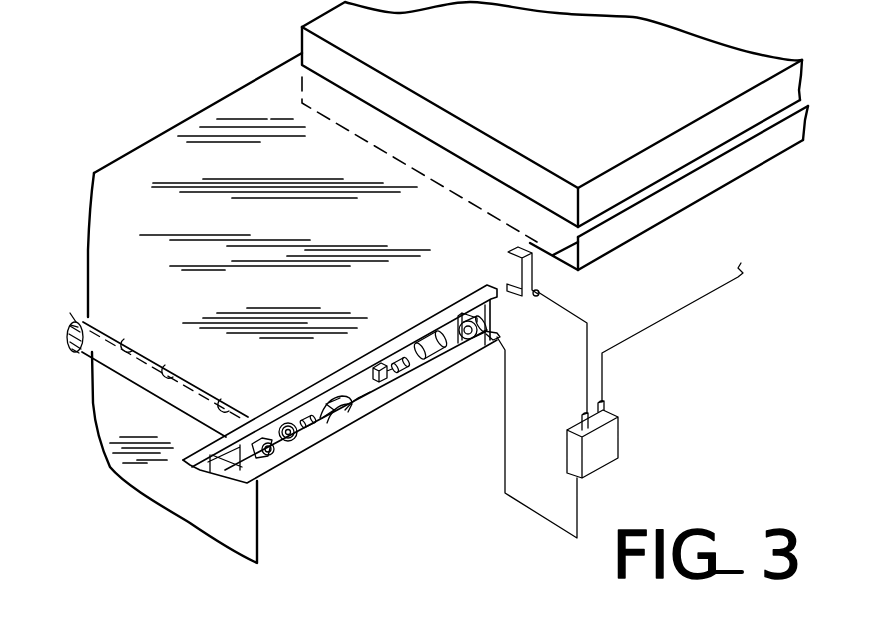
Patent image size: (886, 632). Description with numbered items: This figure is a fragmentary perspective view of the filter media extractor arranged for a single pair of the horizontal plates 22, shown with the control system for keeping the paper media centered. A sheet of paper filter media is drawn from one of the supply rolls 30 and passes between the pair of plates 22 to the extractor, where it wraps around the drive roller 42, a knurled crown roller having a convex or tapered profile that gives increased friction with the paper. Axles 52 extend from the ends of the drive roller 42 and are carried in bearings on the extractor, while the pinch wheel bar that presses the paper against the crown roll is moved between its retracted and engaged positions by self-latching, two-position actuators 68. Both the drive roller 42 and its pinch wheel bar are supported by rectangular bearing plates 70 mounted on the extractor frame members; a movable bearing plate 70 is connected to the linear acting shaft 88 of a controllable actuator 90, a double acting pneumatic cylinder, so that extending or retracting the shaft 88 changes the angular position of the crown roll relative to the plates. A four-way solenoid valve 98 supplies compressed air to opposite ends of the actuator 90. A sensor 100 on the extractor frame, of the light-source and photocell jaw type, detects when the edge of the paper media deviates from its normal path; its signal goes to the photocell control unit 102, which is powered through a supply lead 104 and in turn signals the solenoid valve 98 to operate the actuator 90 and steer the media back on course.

The horizontal plates 22 is at (638, 222).
The rolls of filter media 30 is at (362, 233).
The drive roller 42 is at (162, 392).
The axles 52 is at (276, 452).
The two-position actuators 68 is at (360, 428).
The bearing plates 70 is at (372, 382).
The linear acting shaft 88 is at (395, 373).
The controllable actuator 90 is at (427, 347).
The four-way solenoid valve 98 is at (470, 337).
The sensor 100 is at (528, 272).
The photocell control unit 102 is at (610, 443).
The supply lead 104 is at (683, 312).